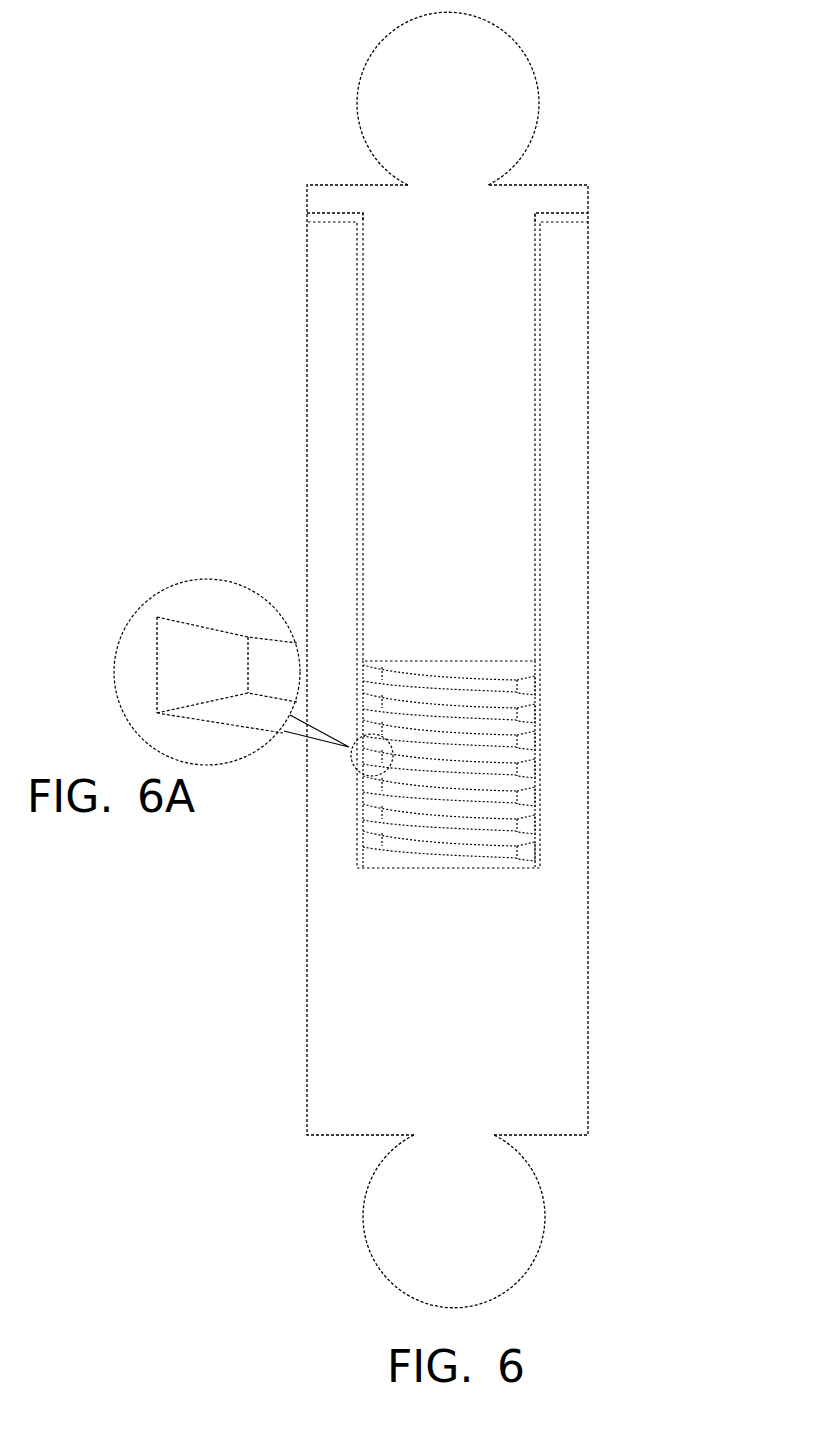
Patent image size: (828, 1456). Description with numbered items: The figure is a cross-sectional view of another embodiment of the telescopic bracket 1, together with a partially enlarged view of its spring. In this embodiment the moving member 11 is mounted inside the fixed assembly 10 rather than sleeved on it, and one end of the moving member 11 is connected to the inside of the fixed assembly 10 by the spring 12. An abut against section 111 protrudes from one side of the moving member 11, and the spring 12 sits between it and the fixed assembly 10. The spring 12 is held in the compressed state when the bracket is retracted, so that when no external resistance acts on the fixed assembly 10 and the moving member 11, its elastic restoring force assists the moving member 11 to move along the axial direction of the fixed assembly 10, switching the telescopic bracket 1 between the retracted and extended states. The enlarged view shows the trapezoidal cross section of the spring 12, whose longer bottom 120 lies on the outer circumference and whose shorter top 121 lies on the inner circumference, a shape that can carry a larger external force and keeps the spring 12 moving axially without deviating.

In FIG. 6, the telescopic bracket 1 is at (616, 126).
In FIG. 6, the fixed assembly 10 is at (312, 483).
In FIG. 6, the abut against section 111 is at (578, 193).
In FIG. 6, the moving member 11 is at (375, 417).
In FIG. 6, the spring 12 is at (365, 791).
In FIG. 6A, the spring 12 is at (138, 636).
In FIG. 6A, the bottom 120 is at (157, 680).
In FIG. 6A, the top 121 is at (248, 648).